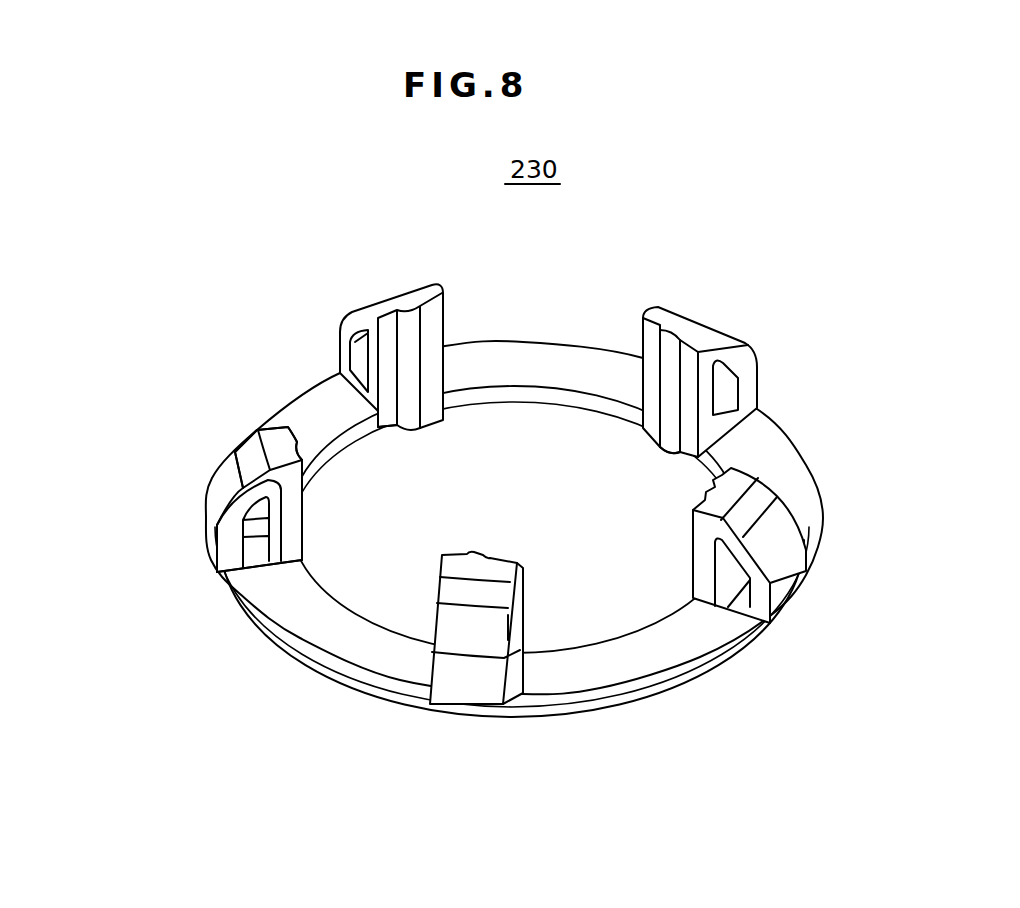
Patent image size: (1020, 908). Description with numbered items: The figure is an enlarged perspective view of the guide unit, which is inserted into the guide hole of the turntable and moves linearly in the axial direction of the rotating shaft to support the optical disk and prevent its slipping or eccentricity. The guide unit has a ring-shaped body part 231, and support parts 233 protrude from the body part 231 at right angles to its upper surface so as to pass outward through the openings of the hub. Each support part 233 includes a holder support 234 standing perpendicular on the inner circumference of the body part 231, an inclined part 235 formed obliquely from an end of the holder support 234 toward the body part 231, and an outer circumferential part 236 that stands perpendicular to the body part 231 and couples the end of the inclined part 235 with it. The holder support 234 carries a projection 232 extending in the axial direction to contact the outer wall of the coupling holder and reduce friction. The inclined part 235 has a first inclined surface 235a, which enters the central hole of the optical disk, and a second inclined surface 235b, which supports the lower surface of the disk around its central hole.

The body part 231 is at (632, 662).
The projection 232 is at (667, 350).
The support part 233 is at (720, 365).
The holder support 234 is at (708, 410).
The inclined part 235 is at (157, 490).
The first inclined surface 235a is at (232, 456).
The second inclined surface 235b is at (220, 480).
The outer circumferential part 236 is at (797, 573).